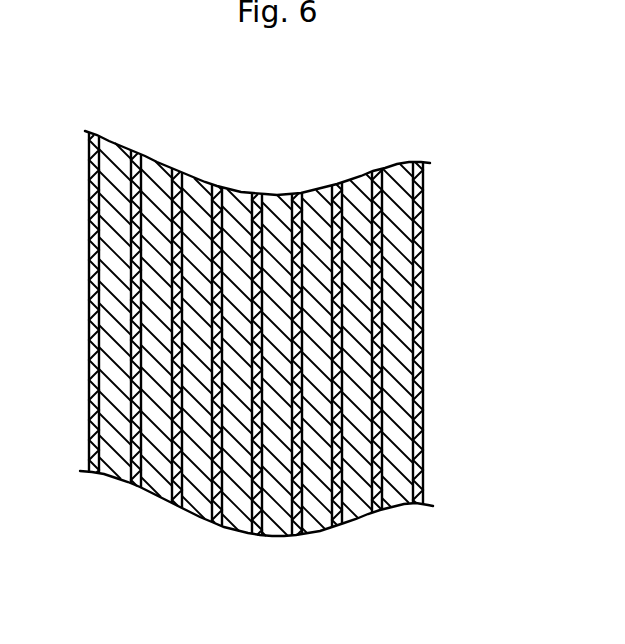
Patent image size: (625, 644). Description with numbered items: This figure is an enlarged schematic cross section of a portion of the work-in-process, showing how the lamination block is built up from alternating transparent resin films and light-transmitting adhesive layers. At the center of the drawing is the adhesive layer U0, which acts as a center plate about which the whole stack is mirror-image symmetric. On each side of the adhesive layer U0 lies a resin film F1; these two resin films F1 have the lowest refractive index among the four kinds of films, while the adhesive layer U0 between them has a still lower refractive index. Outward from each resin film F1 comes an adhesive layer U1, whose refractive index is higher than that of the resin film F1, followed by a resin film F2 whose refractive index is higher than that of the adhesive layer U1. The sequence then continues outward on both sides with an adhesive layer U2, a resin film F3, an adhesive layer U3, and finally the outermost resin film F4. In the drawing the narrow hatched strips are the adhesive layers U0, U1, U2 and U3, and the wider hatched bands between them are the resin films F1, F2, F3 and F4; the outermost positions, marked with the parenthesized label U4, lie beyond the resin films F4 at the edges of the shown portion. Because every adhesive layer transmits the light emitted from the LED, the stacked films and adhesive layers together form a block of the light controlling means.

The resin film F1 is at (275, 210).
The resin film F2 is at (195, 193).
The resin film F3 is at (153, 177).
The resin film F4 is at (113, 157).
The adhesive layer U0 is at (255, 537).
The adhesive layer U1 is at (215, 527).
The adhesive layer U2 is at (172, 508).
The adhesive layer U3 is at (136, 487).
The fourth unit strip U4 is at (91, 475).